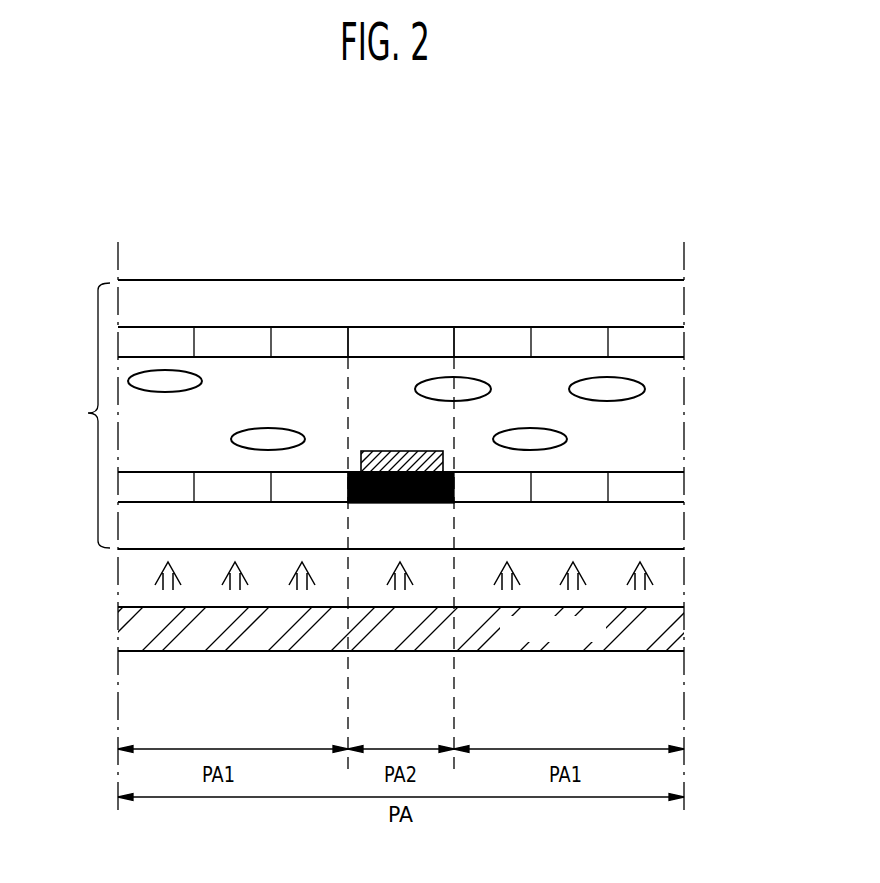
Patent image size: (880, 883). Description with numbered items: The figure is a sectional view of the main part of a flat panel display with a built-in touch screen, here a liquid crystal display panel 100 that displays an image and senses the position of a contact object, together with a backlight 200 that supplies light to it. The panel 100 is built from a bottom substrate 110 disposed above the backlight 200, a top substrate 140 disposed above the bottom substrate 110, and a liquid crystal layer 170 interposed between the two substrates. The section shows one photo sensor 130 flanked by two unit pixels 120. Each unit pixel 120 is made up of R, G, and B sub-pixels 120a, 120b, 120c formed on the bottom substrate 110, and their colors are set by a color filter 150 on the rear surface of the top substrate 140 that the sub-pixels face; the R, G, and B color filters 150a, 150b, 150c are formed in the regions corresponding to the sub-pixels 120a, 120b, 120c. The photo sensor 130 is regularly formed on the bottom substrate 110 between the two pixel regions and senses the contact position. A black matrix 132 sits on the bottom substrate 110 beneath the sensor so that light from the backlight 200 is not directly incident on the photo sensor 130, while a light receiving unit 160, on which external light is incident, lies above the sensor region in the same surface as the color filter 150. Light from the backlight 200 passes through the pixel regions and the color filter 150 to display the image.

The liquid crystal display panel 100 is at (78, 415).
The bottom substrate 110 is at (670, 526).
The unit pixel 120 is at (333, 698).
The R sub-pixel 120a is at (173, 492).
The G sub-pixel 120b is at (243, 492).
The B sub-pixel 120c is at (317, 492).
The photo sensor 130 is at (392, 451).
The black matrix 132 is at (375, 503).
The top substrate 140 is at (668, 301).
The color filter 150 is at (367, 223).
The R color filter 150a is at (168, 335).
The G color filter 150b is at (235, 335).
The B color filter 150c is at (312, 335).
The light receiving unit 160 is at (373, 335).
The liquid crystal layer 170 is at (668, 419).
The backlight 200 is at (673, 627).